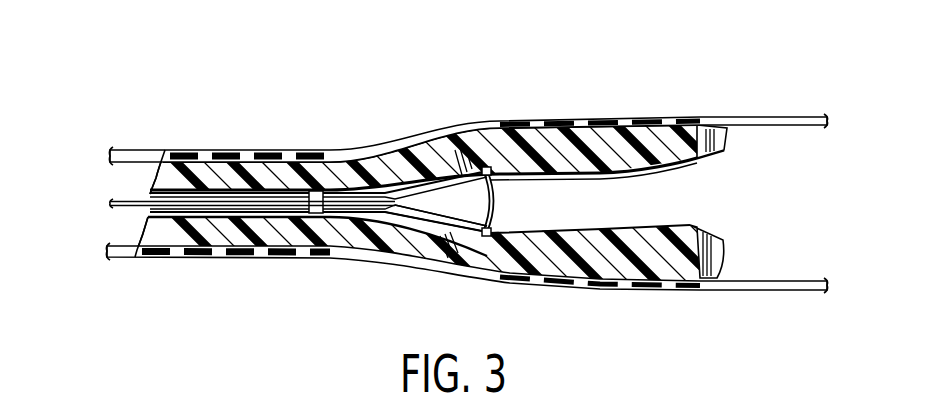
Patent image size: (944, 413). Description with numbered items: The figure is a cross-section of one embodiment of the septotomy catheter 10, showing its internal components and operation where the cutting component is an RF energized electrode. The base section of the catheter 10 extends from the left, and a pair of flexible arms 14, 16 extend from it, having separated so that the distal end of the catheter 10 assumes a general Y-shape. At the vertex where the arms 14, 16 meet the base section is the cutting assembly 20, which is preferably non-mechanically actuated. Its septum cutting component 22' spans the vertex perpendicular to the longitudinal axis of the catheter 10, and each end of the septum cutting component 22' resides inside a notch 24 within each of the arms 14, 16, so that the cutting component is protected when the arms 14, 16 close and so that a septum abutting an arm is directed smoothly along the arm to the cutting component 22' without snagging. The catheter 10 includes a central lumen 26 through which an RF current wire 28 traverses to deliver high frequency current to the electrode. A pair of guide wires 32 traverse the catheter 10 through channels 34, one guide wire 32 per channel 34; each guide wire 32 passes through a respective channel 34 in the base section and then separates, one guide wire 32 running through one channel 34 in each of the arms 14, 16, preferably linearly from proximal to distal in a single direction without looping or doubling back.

The septotomy catheter 10 is at (198, 116).
The flexible arm 14 is at (642, 113).
The flexible arm 16 is at (633, 292).
The cutting assembly 20 is at (382, 219).
The septum cutting component 22' is at (509, 201).
The notch 24 is at (430, 238).
The central lumen 26 is at (222, 210).
The RF current wire 28 is at (116, 202).
The guide wire 32 is at (792, 116).
The channel 34 is at (541, 120).